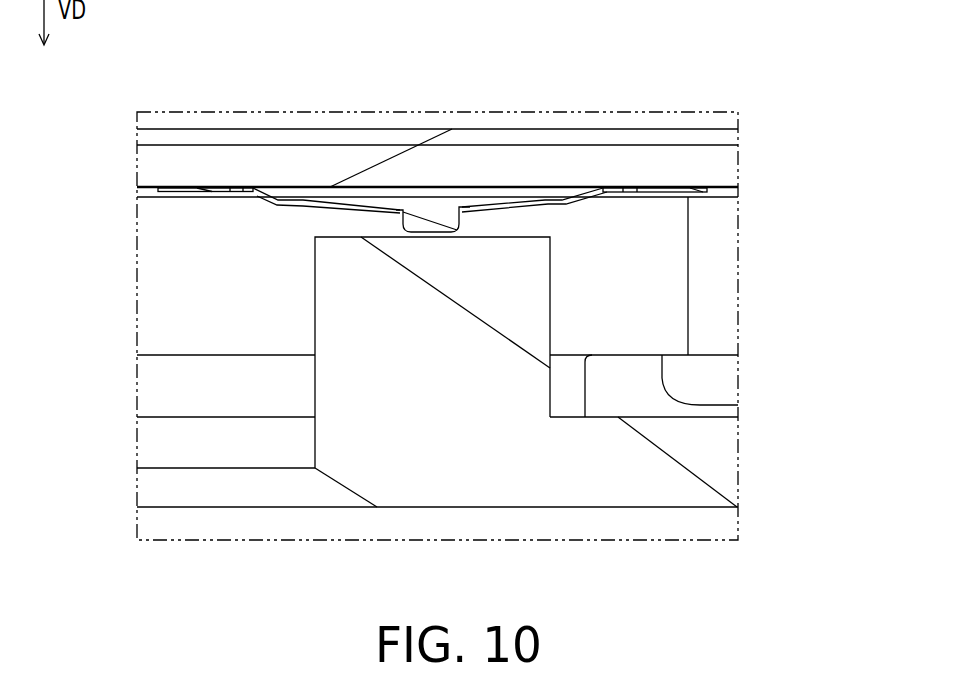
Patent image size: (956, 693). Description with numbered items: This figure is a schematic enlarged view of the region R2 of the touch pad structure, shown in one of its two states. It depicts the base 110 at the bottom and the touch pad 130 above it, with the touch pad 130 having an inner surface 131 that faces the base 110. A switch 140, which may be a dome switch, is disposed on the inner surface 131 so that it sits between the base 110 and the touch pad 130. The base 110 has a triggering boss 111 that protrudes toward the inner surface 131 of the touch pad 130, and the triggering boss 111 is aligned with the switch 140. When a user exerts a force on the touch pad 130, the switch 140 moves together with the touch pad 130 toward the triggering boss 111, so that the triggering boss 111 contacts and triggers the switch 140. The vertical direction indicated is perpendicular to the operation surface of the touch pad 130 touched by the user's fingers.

The base 110 is at (710, 462).
The triggering boss 111 is at (507, 258).
The touch pad 130 is at (748, 129).
The inner surface 131 is at (148, 192).
The switch 140 is at (443, 218).
The region R2 is at (738, 259).